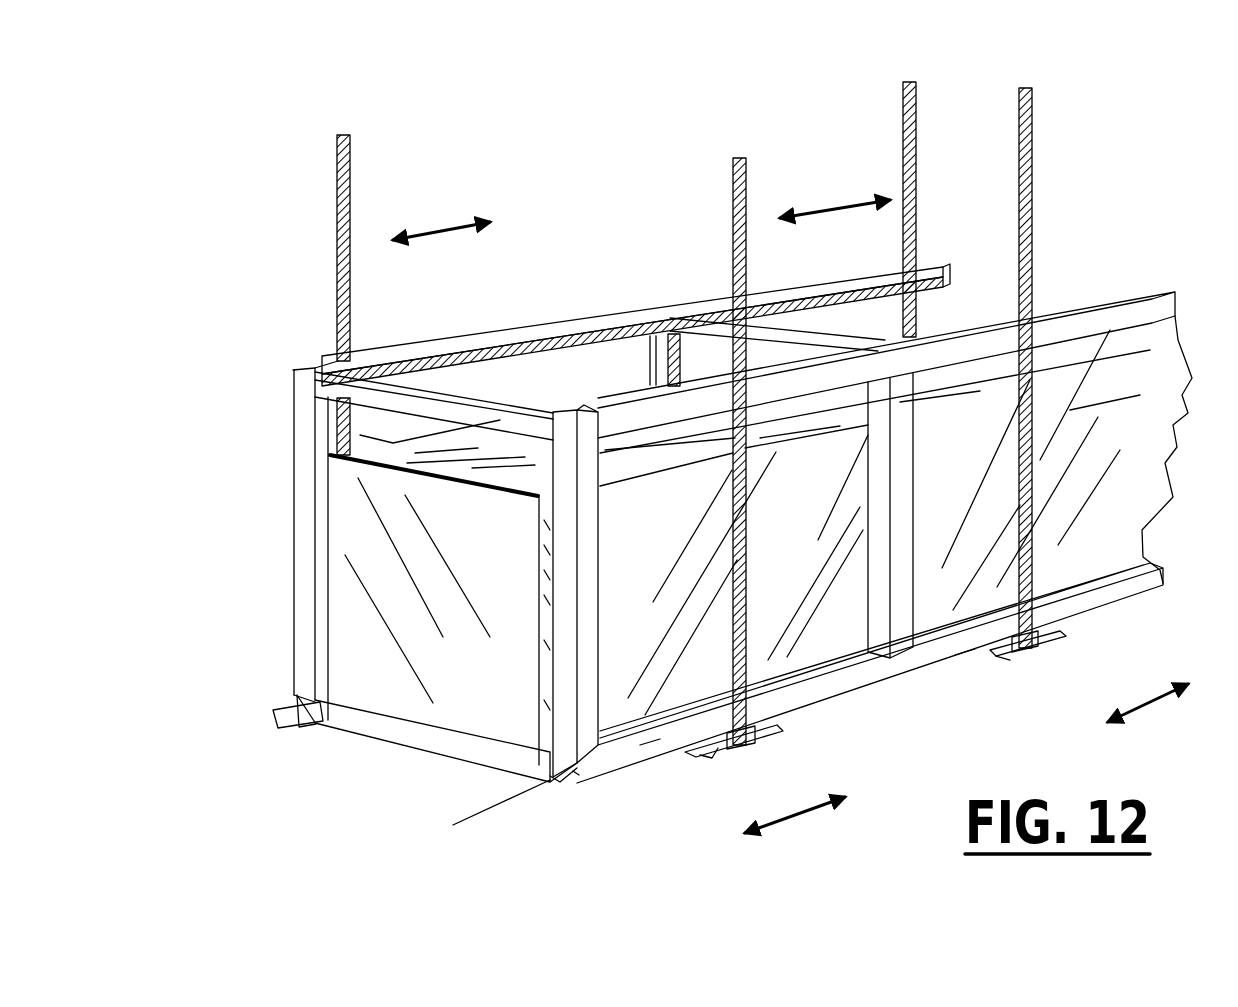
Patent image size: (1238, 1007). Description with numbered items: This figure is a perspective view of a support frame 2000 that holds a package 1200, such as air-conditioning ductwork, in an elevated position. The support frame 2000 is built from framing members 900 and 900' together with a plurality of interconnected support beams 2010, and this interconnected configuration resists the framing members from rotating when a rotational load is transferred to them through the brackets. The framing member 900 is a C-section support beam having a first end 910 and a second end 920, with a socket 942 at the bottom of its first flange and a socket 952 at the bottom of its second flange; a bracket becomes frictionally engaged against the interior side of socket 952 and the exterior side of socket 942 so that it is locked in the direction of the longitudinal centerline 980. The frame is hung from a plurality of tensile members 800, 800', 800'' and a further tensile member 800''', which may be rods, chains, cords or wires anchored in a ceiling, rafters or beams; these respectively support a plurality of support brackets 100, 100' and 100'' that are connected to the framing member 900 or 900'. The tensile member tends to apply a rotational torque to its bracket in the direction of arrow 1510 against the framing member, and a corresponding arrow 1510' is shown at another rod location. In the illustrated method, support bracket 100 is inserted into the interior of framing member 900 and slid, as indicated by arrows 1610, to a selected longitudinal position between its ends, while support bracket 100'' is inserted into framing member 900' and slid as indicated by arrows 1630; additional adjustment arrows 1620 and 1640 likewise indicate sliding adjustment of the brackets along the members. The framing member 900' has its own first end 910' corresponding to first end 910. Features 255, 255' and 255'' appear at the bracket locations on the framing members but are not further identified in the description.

The tensile member 800'' is at (292, 270).
The support rod 800 is at (693, 444).
The tie rod 800''' is at (842, 196).
The tensile member 800' is at (1085, 355).
The arrow 1630 is at (448, 232).
The arrow 1640 is at (810, 206).
The arrow 1610 is at (795, 822).
The arrow 1620 is at (1165, 690).
The plurality of supporting beams 2010 is at (497, 398).
The support frame 2000 is at (300, 462).
The duct 1200 is at (350, 593).
The corner post 910' is at (276, 647).
The framing member 900' is at (254, 544).
The support bracket 100'' is at (283, 747).
The bracket 255'' is at (320, 743).
The longitudinal centerline 980 is at (478, 812).
The socket 952 is at (548, 782).
The first end 910 is at (542, 591).
The socket 942 is at (577, 779).
The bracket 255 is at (653, 771).
The support bracket 100 is at (695, 790).
The arrow 1510 is at (745, 733).
The support beam 900 is at (739, 673).
The bracket 255' is at (986, 688).
The support bracket 100' is at (1044, 692).
The base plate 1510' is at (1041, 647).
The second end 920 is at (1160, 575).